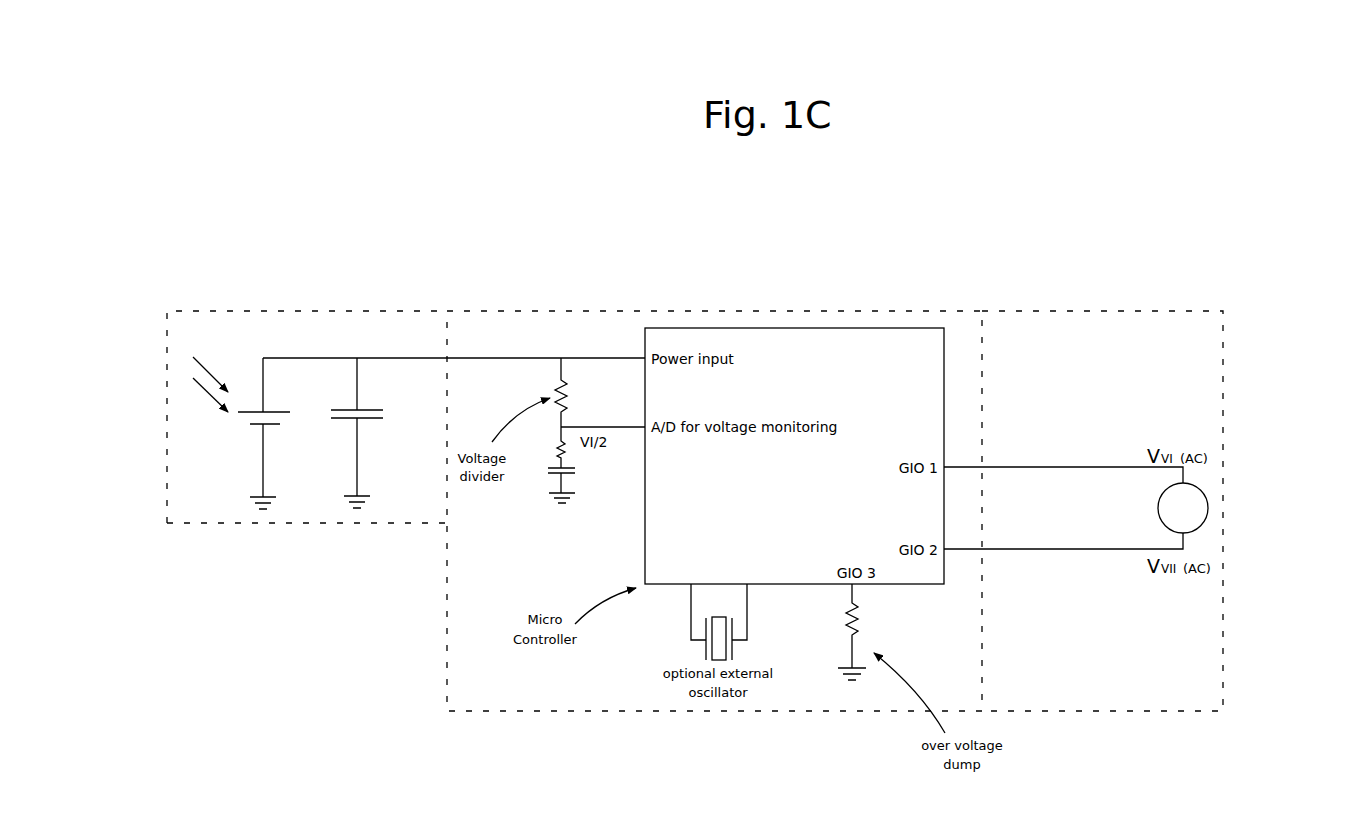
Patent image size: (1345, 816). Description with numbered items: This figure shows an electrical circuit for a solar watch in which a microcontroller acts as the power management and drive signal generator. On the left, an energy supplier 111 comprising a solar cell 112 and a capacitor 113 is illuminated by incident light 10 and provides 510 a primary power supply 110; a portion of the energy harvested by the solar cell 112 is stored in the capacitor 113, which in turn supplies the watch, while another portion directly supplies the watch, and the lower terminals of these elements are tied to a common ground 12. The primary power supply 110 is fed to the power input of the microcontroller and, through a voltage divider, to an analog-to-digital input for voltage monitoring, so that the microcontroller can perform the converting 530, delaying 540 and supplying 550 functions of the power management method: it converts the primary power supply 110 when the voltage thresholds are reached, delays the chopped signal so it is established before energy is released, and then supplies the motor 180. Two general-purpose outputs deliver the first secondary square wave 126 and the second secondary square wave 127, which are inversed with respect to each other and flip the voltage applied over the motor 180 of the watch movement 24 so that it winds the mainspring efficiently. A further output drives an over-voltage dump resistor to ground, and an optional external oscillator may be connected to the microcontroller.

The light / solar radiation input 10 is at (178, 358).
The primary power supply 110 is at (388, 356).
The providing step 510 is at (220, 511).
The converting step 530 is at (714, 511).
The delaying step 540 is at (714, 511).
The supplying step 550 is at (587, 706).
The energy supplier 111 is at (291, 502).
The solar cell 112 is at (256, 425).
The capacitor 113 is at (358, 502).
The ground 12 is at (367, 516).
The first secondary square wave 126 is at (1097, 466).
The second secondary square wave 127 is at (1097, 550).
The motor 24 is at (1241, 471).
The motor 180 is at (1208, 508).